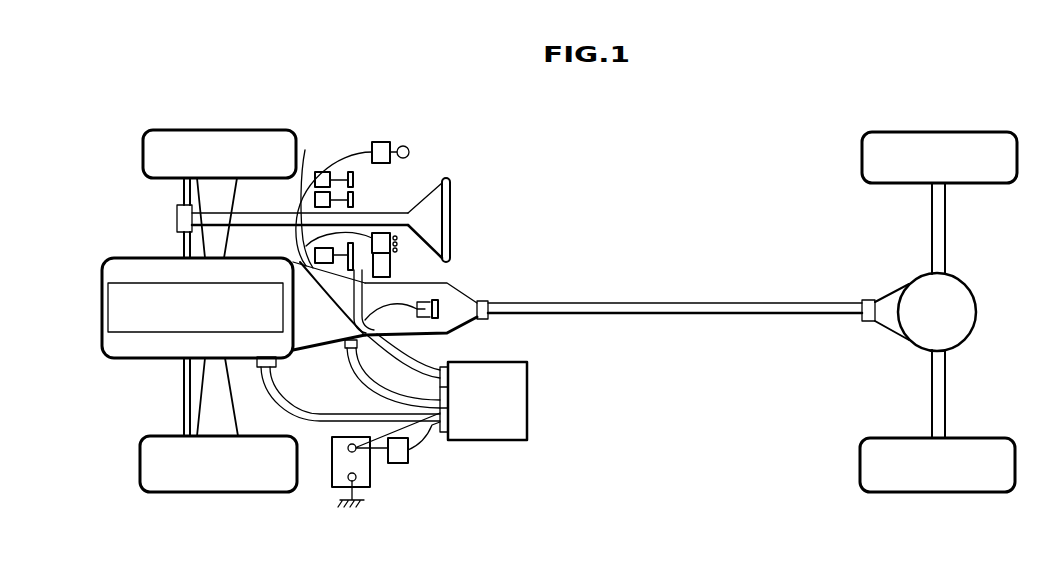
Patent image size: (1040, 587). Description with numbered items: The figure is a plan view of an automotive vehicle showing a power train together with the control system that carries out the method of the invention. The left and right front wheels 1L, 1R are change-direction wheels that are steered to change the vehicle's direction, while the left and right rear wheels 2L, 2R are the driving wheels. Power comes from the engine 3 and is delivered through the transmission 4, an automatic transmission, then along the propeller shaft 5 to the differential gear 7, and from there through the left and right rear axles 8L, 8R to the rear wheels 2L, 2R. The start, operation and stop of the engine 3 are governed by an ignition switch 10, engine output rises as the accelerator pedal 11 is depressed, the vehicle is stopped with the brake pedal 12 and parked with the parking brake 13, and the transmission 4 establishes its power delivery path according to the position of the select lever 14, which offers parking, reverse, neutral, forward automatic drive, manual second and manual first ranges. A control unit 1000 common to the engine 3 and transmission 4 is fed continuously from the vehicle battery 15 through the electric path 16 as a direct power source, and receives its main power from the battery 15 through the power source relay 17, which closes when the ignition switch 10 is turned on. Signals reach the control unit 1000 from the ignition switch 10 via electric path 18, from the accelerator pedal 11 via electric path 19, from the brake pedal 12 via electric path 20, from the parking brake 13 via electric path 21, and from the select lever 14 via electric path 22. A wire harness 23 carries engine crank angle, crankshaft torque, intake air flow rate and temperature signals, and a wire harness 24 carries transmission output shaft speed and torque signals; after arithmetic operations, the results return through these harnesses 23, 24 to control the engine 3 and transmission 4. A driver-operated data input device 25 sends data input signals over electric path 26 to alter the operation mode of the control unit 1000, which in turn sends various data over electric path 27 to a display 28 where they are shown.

The right front wheel 1R is at (172, 128).
The left front wheel 1L is at (162, 492).
The right rear wheel 2R is at (1000, 132).
The left rear wheel 2L is at (988, 492).
The engine 3 is at (131, 359).
The transmission 4 is at (315, 353).
The propeller shaft 5 is at (737, 302).
The differential gear 7 is at (977, 322).
The right rear axle 8R is at (950, 247).
The left rear axle 8L is at (947, 393).
The ignition switch 10 is at (386, 142).
The accelerator pedal 11 is at (353, 180).
The brake pedal 12 is at (353, 200).
The parking brake 13 is at (315, 251).
The select lever 14 is at (440, 306).
The vehicle battery 15 is at (333, 466).
The electric path 16 is at (382, 431).
The power source relay 17 is at (402, 463).
The electric path 18 is at (352, 150).
The electric path 19 is at (314, 198).
The electric path 20 is at (302, 210).
The electric path 21 is at (293, 262).
The electric path 22 is at (456, 322).
The wire harness 23 is at (283, 400).
The wire harness 24 is at (370, 390).
The data input device 25 is at (397, 245).
The electric path 26 is at (357, 293).
The electric path 27 is at (390, 316).
The display 28 is at (392, 266).
The control unit 1000 is at (527, 403).